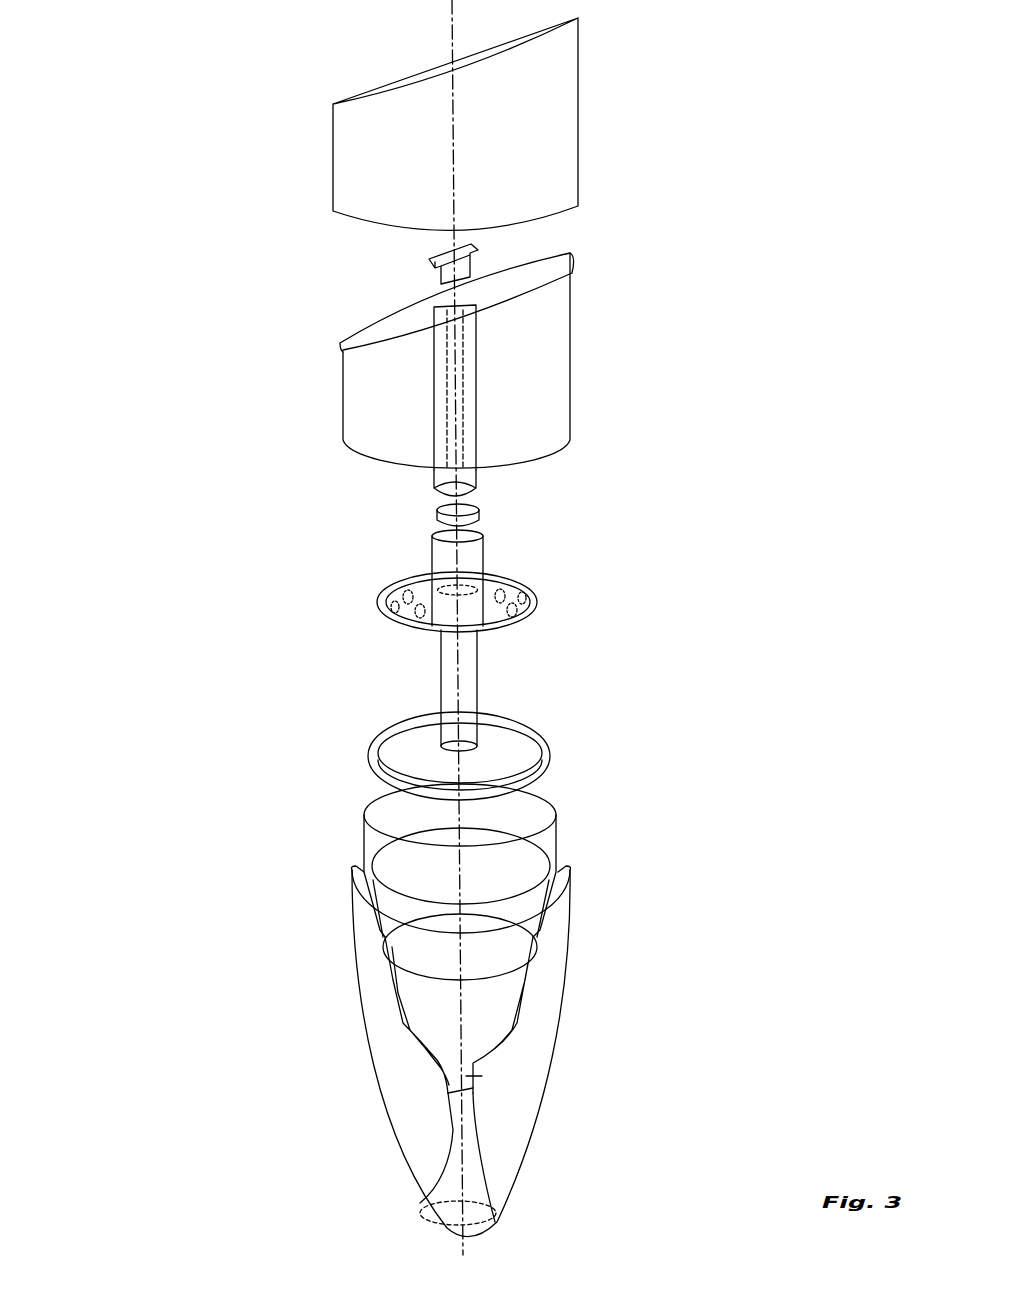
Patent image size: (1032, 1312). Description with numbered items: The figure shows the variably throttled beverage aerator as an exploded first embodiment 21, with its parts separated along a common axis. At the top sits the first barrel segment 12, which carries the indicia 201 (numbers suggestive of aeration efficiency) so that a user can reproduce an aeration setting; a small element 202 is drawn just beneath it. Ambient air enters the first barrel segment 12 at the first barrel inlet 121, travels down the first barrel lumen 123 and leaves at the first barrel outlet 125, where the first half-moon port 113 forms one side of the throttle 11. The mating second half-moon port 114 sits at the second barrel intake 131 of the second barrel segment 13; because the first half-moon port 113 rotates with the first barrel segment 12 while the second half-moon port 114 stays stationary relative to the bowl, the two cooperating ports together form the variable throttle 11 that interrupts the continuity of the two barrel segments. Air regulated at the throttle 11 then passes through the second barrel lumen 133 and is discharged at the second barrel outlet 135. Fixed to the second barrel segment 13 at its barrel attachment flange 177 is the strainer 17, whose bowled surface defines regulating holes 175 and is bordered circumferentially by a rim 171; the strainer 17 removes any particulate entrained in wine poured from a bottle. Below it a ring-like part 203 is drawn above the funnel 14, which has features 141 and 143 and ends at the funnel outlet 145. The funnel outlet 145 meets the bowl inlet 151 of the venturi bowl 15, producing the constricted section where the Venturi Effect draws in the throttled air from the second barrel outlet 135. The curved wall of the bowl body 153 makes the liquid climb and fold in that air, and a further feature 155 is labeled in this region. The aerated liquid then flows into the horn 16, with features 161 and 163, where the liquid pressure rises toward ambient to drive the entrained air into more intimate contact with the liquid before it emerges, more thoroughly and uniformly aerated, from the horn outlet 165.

The exploded first embodiment 21 is at (140, 64).
The indicia 201 is at (517, 134).
The plug 202 is at (471, 257).
The first barrel segment 12 is at (420, 376).
The first barrel inlet 121 is at (478, 307).
The first barrel lumen 123 is at (452, 397).
The first barrel outlet 125 is at (452, 468).
The first half-moon port 113 is at (477, 476).
The second half-moon port 114 is at (477, 515).
The throttle 11 is at (396, 508).
The second barrel segment 13 is at (398, 686).
The second barrel intake 131 is at (436, 632).
The second barrel lumen 133 is at (442, 670).
The second barrel outlet 135 is at (442, 740).
The strainer 17 is at (528, 565).
The rim 171 is at (530, 592).
The regulating holes 175 is at (493, 590).
The barrel attachment flange 177 is at (527, 620).
The sealing ring 203 is at (550, 738).
The funnel 14 is at (389, 1031).
The cylinder wall 141 is at (422, 983).
The cylinder inner rim 143 is at (442, 1013).
The funnel outlet 145 is at (405, 1025).
The venturi bowl 15 is at (511, 1060).
The bowl inlet 151 is at (480, 1056).
The bowl body 153 is at (474, 1068).
The funnel outlet 155 is at (473, 1086).
The horn 16 is at (425, 1155).
The outlet tube 161 is at (452, 1087).
The tube bottom 163 is at (452, 1128).
The horn outlet 165 is at (460, 1203).